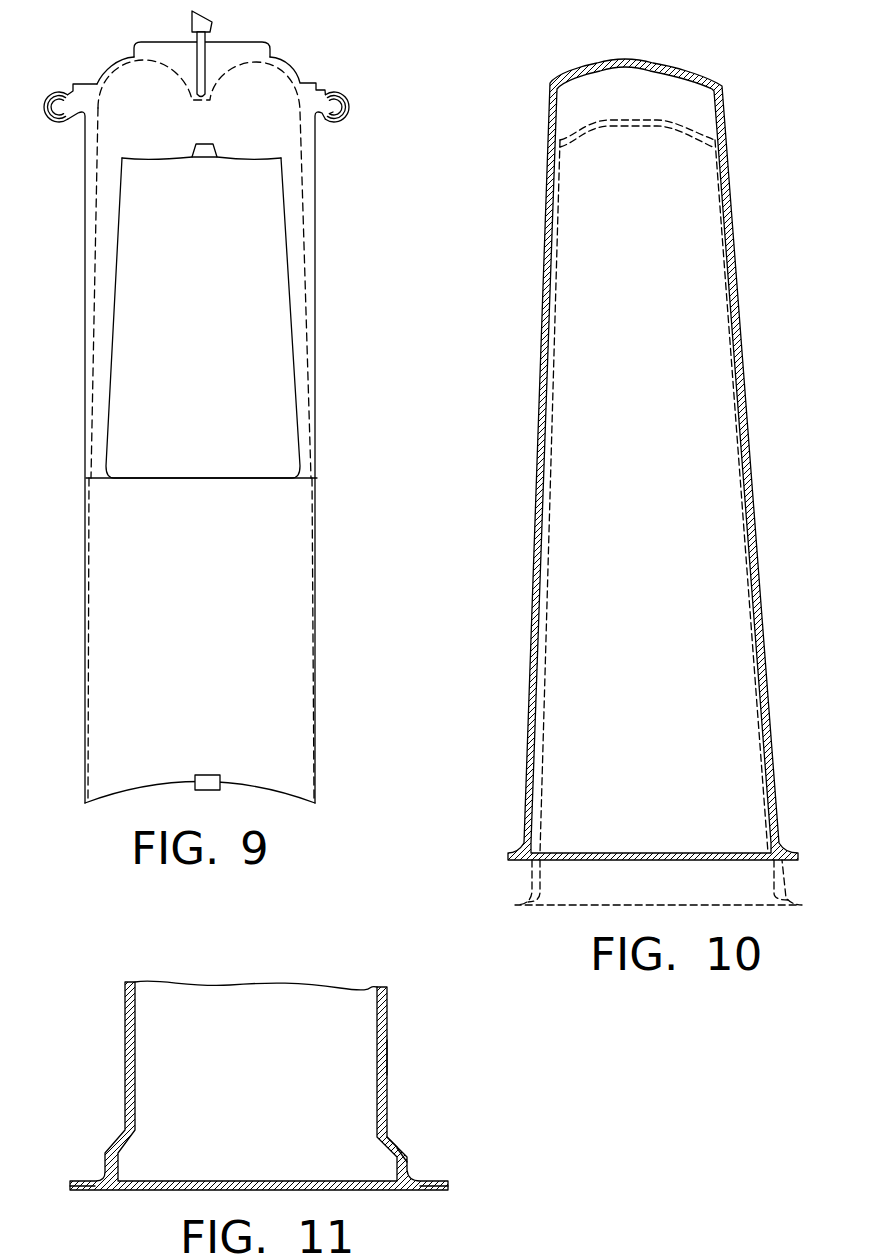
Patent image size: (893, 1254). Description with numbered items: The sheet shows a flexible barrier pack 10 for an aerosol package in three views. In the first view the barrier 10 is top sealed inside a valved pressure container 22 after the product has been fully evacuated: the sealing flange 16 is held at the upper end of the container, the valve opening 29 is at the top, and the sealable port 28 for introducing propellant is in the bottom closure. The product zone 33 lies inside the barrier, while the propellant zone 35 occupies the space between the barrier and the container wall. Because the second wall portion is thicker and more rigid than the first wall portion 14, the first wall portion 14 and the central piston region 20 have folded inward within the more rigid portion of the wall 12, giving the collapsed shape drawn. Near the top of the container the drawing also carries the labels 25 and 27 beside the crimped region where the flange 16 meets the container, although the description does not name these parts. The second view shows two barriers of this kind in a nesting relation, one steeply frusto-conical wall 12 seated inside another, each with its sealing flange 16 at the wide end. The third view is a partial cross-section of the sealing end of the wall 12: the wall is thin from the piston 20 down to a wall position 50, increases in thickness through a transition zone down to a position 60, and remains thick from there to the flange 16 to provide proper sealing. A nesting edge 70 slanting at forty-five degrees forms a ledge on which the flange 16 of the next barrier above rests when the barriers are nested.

In FIG. 10, the barrier 10 is at (774, 718).
In FIG. 9, the wall 12 is at (96, 167).
In FIG. 11, the wall 12 is at (124, 1021).
In FIG. 9, the first wall portion 14 is at (101, 119).
In FIG. 9, the sealing flange 16 is at (352, 107).
In FIG. 10, the sealing flange 16 is at (793, 852).
In FIG. 11, the sealing flange 16 is at (94, 1191).
In FIG. 9, the central piston region 20 is at (228, 158).
In FIG. 9, the pressure container 22 is at (318, 422).
In FIG. 9, the dome 25 is at (104, 99).
In FIG. 9, the bead 27 is at (341, 122).
In FIG. 9, the sealable port 28 is at (211, 750).
In FIG. 9, the opening 29 is at (150, 42).
In FIG. 9, the product zone 33 is at (257, 122).
In FIG. 9, the propellant zone 35 is at (194, 594).
In FIG. 11, the wall position 50 is at (390, 1070).
In FIG. 11, the position 60 is at (409, 1153).
In FIG. 11, the nesting edge 70 is at (391, 1138).